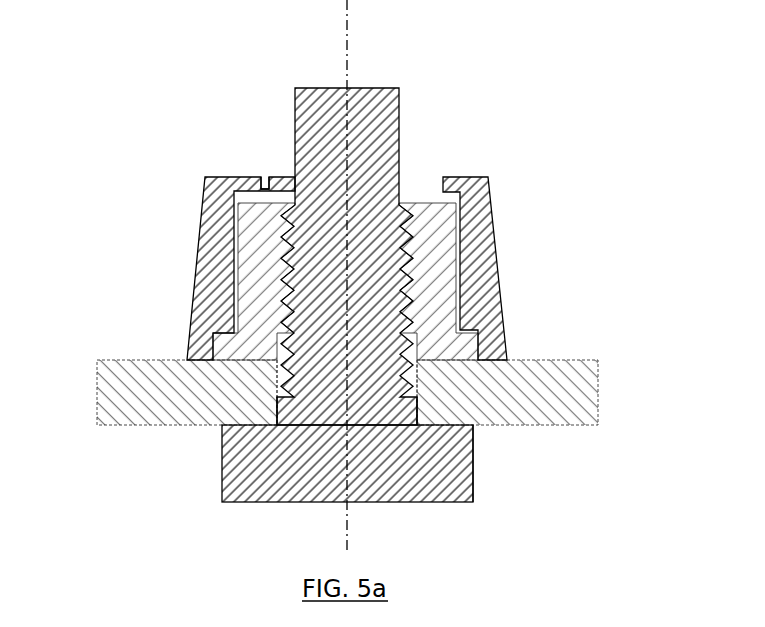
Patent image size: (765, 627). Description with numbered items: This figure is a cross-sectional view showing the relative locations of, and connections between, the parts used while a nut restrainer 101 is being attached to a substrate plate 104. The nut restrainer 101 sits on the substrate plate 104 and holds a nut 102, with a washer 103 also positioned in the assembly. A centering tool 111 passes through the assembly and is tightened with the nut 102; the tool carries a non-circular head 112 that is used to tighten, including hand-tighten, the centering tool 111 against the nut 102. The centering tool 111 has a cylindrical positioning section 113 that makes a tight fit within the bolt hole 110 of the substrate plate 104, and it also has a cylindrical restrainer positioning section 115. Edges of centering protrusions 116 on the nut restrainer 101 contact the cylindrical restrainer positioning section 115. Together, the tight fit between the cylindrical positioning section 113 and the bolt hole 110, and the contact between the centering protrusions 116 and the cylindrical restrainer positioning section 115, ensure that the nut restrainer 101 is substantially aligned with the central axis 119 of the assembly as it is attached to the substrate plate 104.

The nut restrainer 101 is at (199, 208).
The nut 102 is at (432, 196).
The washer 103 is at (489, 338).
The substrate plate 104 is at (167, 358).
The bolt hole 110 is at (276, 377).
The centering tool 111 is at (286, 503).
The non-circular head 112 is at (475, 465).
The cylindrical positioning section 113 is at (419, 409).
The cylindrical restrainer positioning section 115 is at (406, 115).
The centering protrusions 116 is at (281, 168).
The central axis 119 is at (351, 67).